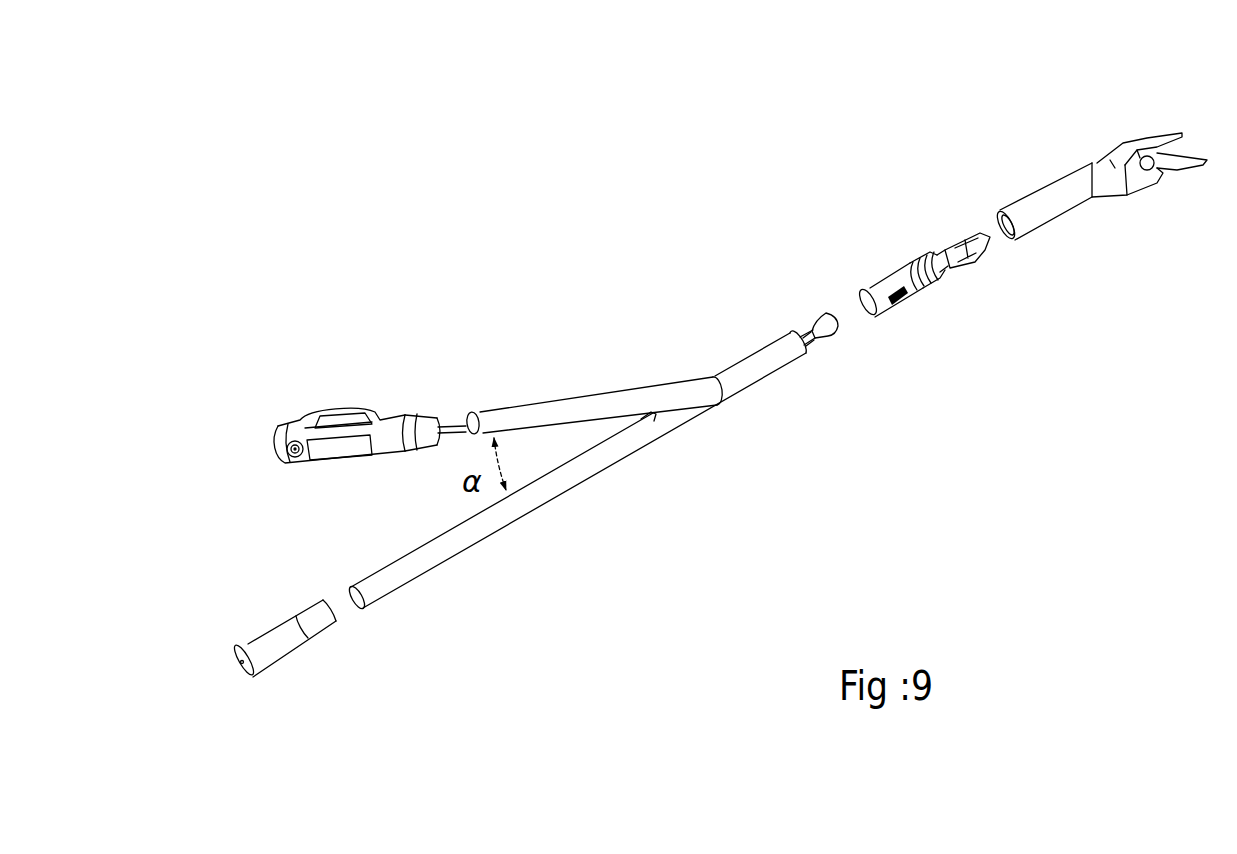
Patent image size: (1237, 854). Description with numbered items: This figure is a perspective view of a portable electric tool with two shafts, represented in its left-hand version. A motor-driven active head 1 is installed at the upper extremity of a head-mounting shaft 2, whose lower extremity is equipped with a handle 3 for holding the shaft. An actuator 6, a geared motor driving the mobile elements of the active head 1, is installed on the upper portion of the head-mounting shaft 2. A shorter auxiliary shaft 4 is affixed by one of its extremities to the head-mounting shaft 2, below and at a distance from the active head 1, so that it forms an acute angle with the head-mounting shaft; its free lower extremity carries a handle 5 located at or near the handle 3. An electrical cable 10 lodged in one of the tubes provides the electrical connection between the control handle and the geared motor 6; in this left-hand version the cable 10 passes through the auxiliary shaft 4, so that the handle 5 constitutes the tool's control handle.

The active head 1 is at (1097, 214).
The head-mounting shaft 2 is at (573, 493).
The handle 3 is at (385, 434).
The auxiliary shaft 4 is at (596, 388).
The handle 5 is at (270, 628).
The actuator 6 is at (929, 296).
The electrical cable 10 is at (455, 420).